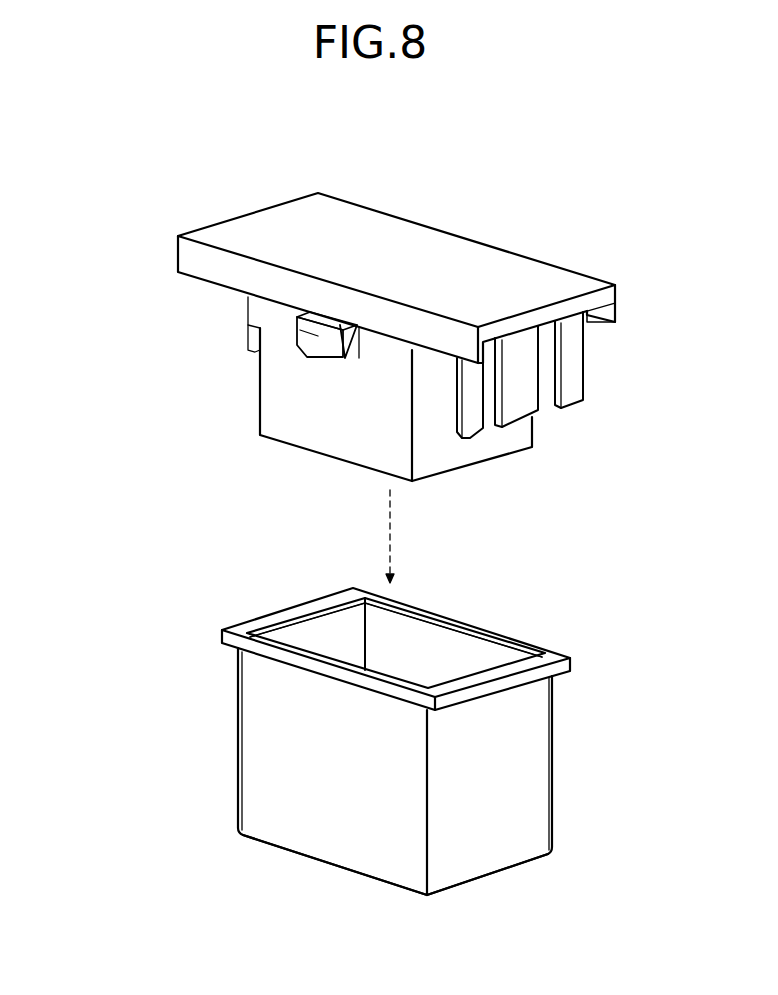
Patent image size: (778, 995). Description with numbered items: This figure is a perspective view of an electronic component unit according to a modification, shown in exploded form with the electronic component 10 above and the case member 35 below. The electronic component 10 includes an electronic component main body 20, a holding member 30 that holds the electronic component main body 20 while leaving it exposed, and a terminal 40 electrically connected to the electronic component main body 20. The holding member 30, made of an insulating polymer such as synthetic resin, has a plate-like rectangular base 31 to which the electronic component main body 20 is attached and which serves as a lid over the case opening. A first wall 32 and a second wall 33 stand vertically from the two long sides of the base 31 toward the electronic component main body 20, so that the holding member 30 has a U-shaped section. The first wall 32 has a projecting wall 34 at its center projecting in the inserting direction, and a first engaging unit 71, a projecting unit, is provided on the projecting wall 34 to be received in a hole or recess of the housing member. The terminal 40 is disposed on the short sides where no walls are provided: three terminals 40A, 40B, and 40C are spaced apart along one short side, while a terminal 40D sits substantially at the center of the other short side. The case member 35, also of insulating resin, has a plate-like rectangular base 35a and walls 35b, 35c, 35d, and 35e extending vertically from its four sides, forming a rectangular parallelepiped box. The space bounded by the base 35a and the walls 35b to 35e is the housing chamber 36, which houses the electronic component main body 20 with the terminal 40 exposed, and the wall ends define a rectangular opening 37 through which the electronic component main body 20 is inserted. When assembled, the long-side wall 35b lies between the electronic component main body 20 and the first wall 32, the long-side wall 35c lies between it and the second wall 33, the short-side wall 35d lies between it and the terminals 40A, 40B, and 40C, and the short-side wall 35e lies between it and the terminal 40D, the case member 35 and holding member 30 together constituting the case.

The electronic component 10 is at (75, 163).
The electronic component main body 20 is at (318, 435).
The holding member 30 is at (632, 142).
The base 31 is at (522, 280).
The first wall 32 is at (437, 353).
The second wall 33 is at (620, 310).
The projecting wall 34 is at (378, 340).
The case member 35 is at (207, 585).
The base 35a is at (333, 868).
The wall 35b is at (268, 742).
The wall 35c is at (498, 657).
The wall 35d is at (522, 765).
The wall 35e is at (318, 630).
The housing chamber 36 is at (421, 643).
The opening 37 is at (260, 621).
The terminal 40 is at (437, 396).
The terminal 40A is at (470, 415).
The terminal 40B is at (522, 393).
The terminal 40C is at (568, 358).
The terminal 40D is at (317, 332).
The first engaging unit 71 is at (253, 348).